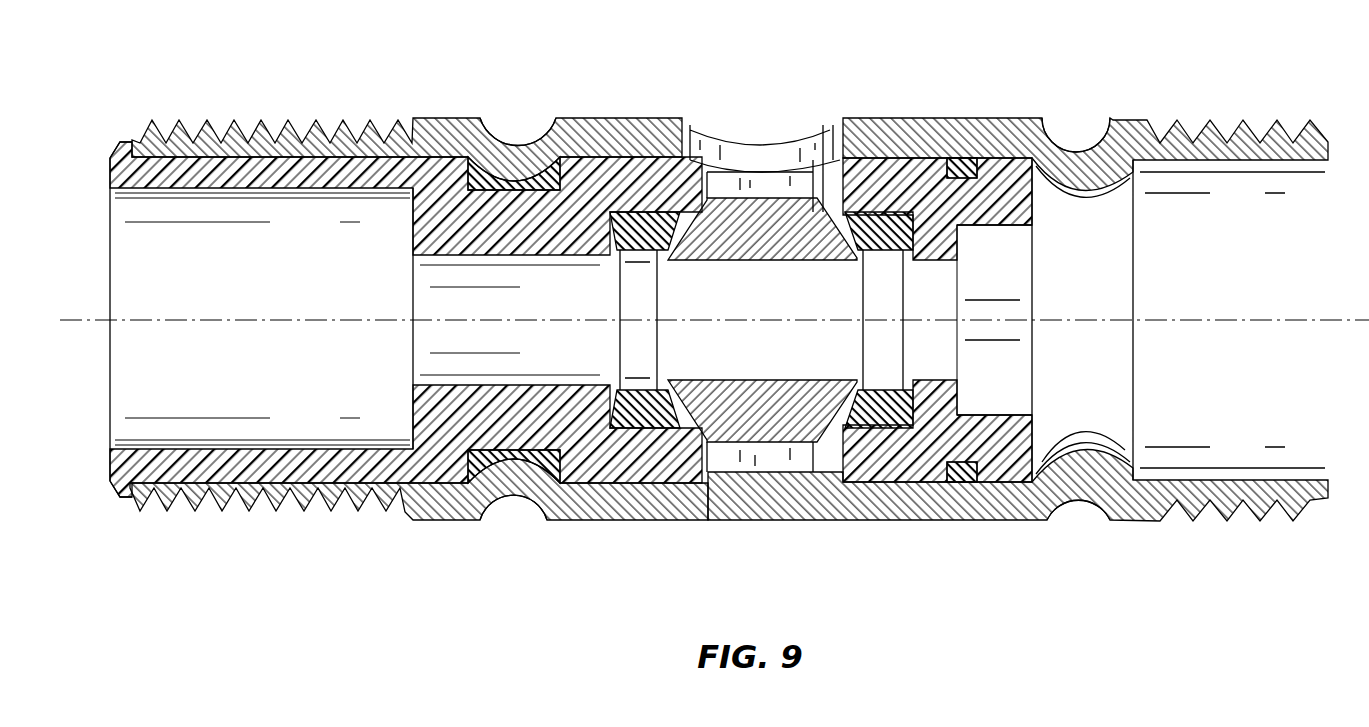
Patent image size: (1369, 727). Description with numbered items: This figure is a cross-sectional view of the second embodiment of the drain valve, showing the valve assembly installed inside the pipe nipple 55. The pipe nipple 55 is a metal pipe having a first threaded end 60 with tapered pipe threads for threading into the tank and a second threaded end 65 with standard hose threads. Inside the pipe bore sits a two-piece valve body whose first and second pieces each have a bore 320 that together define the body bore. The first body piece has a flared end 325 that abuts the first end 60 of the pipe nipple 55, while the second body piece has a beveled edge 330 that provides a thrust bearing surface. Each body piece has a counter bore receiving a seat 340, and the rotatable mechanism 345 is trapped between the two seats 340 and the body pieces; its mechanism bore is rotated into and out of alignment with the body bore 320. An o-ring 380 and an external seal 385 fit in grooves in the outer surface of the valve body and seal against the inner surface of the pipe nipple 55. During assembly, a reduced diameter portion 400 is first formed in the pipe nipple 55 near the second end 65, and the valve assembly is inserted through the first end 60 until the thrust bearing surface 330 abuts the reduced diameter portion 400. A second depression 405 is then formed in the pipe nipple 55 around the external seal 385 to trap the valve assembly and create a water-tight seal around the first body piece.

The pipe nipple 55 is at (618, 122).
The first threaded end 60 is at (188, 125).
The second threaded end 65 is at (1258, 120).
The body bore 320 is at (437, 265).
The flared end 325 is at (110, 172).
The beveled edge 330 is at (1000, 237).
The seat 340 is at (650, 210).
The rotatable mechanism 345 is at (780, 220).
The o-ring 380 is at (957, 178).
The external seal 385 is at (531, 186).
The reduced diameter portion 400 is at (1072, 148).
The second depression 405 is at (498, 143).